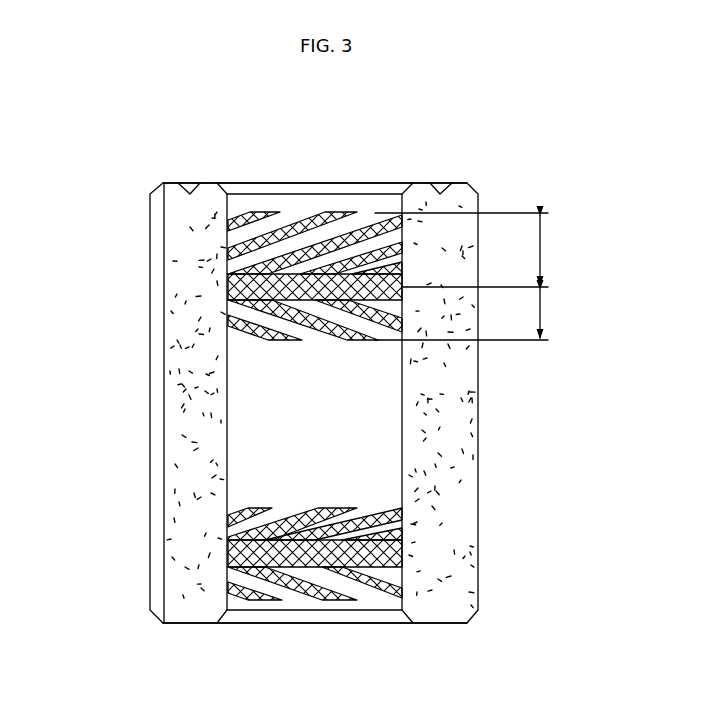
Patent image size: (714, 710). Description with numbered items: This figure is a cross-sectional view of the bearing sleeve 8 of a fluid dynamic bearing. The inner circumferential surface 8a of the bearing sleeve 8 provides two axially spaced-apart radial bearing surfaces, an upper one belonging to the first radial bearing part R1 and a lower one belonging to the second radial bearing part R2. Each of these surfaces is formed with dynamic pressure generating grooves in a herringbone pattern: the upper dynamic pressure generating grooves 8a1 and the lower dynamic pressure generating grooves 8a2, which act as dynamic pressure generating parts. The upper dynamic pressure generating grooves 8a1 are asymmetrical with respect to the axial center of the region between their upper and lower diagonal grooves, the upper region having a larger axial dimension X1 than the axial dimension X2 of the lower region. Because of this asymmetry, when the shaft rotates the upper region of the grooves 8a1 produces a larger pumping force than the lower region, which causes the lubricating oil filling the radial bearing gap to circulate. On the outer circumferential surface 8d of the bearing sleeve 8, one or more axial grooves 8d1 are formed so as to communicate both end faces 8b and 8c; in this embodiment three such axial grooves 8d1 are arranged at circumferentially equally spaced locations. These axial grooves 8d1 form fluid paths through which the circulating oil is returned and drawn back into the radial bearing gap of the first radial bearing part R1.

The bearing sleeve 8 is at (120, 196).
The inner circumferential surface 8a is at (385, 414).
The upper dynamic pressure generating grooves 8a1 is at (270, 223).
The lower dynamic pressure generating grooves 8a2 is at (273, 512).
The end face 8b is at (440, 623).
The end face 8c is at (428, 182).
The outer circumferential surface 8d is at (157, 372).
The axial groove 8d1 is at (163, 441).
The first radial bearing part R1 is at (225, 268).
The second radial bearing part R2 is at (225, 556).
The axial dimension of upper region X1 is at (473, 250).
The axial dimension of lower region X2 is at (473, 314).